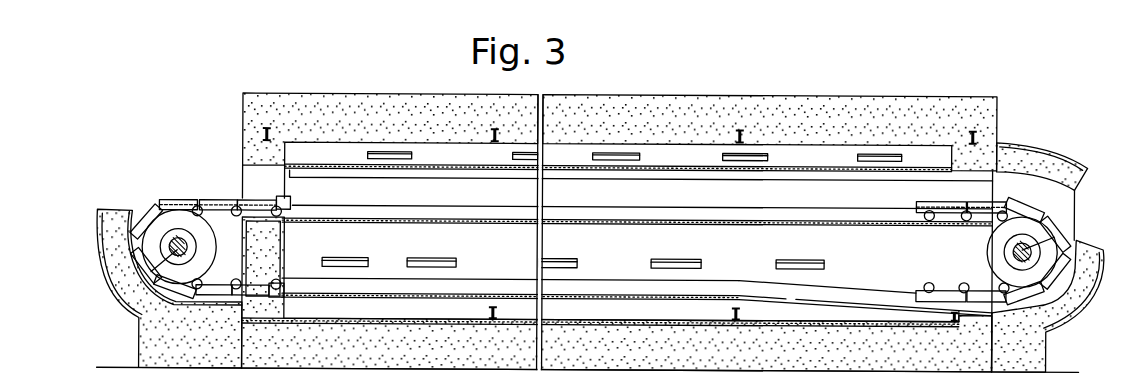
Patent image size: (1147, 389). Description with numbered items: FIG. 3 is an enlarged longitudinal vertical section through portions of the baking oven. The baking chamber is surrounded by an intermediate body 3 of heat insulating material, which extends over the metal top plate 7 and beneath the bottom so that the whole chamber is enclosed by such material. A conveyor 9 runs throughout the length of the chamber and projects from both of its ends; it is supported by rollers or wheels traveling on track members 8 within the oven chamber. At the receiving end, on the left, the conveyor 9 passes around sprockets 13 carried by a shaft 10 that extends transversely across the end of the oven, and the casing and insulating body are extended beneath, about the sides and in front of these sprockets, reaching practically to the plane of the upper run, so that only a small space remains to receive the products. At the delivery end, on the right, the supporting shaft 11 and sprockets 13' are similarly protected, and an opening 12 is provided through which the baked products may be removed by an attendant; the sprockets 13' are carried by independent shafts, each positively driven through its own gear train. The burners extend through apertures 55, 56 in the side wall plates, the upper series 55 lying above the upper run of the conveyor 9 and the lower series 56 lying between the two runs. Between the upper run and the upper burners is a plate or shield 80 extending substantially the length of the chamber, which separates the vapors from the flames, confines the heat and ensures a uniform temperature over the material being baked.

The intermediate body of heat insulating material 3 is at (365, 103).
The top plate 7 is at (586, 147).
The track members 8 is at (359, 217).
The conveyor 9 is at (290, 207).
The shaft 10 is at (130, 290).
The supporting shaft 11 is at (1079, 218).
The opening 12 is at (1086, 230).
The sprockets 13 is at (207, 249).
The sprockets 13' is at (993, 251).
The apertures 55 is at (414, 156).
The apertures 56 is at (416, 258).
The plate or shield 80 is at (545, 171).